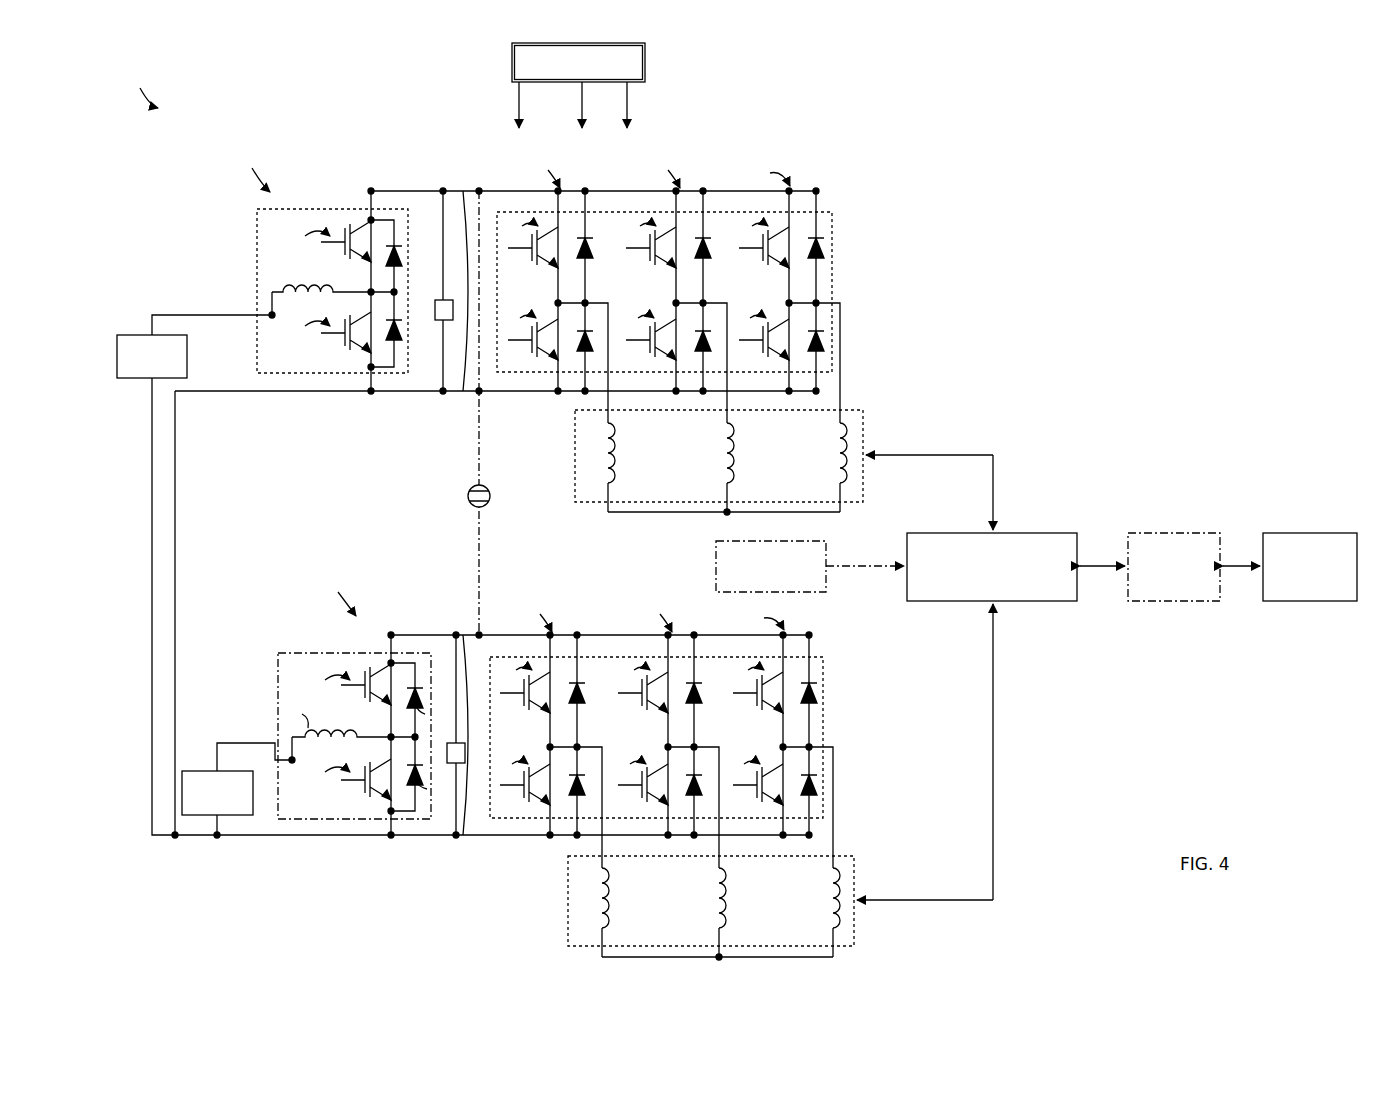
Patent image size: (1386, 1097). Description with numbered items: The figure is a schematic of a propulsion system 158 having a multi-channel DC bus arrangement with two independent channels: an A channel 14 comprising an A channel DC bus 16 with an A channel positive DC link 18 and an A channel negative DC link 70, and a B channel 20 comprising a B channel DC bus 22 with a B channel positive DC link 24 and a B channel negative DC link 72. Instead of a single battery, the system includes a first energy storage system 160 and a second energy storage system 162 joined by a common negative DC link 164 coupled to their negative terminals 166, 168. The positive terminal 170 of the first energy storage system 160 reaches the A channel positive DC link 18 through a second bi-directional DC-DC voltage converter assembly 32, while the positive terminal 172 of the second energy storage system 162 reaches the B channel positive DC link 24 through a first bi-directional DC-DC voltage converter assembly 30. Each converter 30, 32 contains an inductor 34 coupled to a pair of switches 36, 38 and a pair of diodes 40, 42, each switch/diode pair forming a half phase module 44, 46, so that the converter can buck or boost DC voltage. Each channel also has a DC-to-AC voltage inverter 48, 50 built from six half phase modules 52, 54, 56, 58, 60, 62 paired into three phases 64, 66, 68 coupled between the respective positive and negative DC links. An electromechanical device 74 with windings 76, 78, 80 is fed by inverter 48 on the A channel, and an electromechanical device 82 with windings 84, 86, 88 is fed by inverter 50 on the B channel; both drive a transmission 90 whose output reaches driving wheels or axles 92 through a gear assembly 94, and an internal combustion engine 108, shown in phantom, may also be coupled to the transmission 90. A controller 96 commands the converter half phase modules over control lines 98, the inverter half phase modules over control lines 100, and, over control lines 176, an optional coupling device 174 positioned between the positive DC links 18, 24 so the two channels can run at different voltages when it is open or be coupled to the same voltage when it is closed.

The A channel 14 is at (332, 595).
The A channel DC bus 16 is at (467, 735).
The A channel positive DC link 18 is at (430, 635).
The B channel 20 is at (247, 172).
The B channel DC bus 22 is at (456, 291).
The B channel positive DC link 24 is at (425, 191).
The first bi-directional DC-DC voltage converter assembly 30 is at (313, 209).
The second bi-directional DC-DC voltage converter assembly 32 is at (300, 653).
The inductor 34 is at (290, 284).
The switch 36 is at (340, 248).
The switch 38 is at (340, 339).
The diode 40 is at (394, 262).
The diode 42 is at (394, 336).
The half phase module 44 is at (305, 238).
The half phase module 46 is at (305, 329).
The DC-to-AC voltage inverter 48 is at (824, 678).
The DC-to-AC voltage inverter 50 is at (832, 230).
The half phase module 52 is at (529, 245).
The half phase module 54 is at (646, 245).
The half phase module 56 is at (759, 245).
The half phase module 58 is at (528, 337).
The half phase module 60 is at (646, 337).
The half phase module 62 is at (758, 337).
The phase 64 is at (568, 287).
The phase 66 is at (686, 287).
The phase 68 is at (791, 292).
The A channel negative DC link 70 is at (428, 837).
The B channel negative DC link 72 is at (498, 393).
The electromechanical device 74 is at (568, 912).
The winding 76 is at (609, 897).
The winding 78 is at (726, 897).
The winding 80 is at (833, 880).
The electromechanical device 82 is at (575, 455).
The winding 84 is at (615, 452).
The winding 86 is at (734, 452).
The winding 88 is at (840, 436).
The transmission 90 is at (1038, 601).
The driving wheels or axles 92 is at (1304, 601).
The gear assembly 94 is at (1166, 601).
The controller 96 is at (512, 68).
The control lines 98 is at (579, 98).
The control lines 100 is at (630, 98).
The internal combustion engine 108 is at (714, 568).
The propulsion system 158 is at (133, 88).
The first energy storage system 160 is at (196, 771).
The second energy storage system 162 is at (187, 354).
The common negative DC link 164 is at (195, 837).
The negative terminal 166 is at (220, 820).
The negative terminal 168 is at (150, 382).
The positive terminal 170 is at (219, 770).
The positive terminal 172 is at (150, 333).
The coupling device 174 is at (490, 490).
The control lines 176 is at (516, 98).